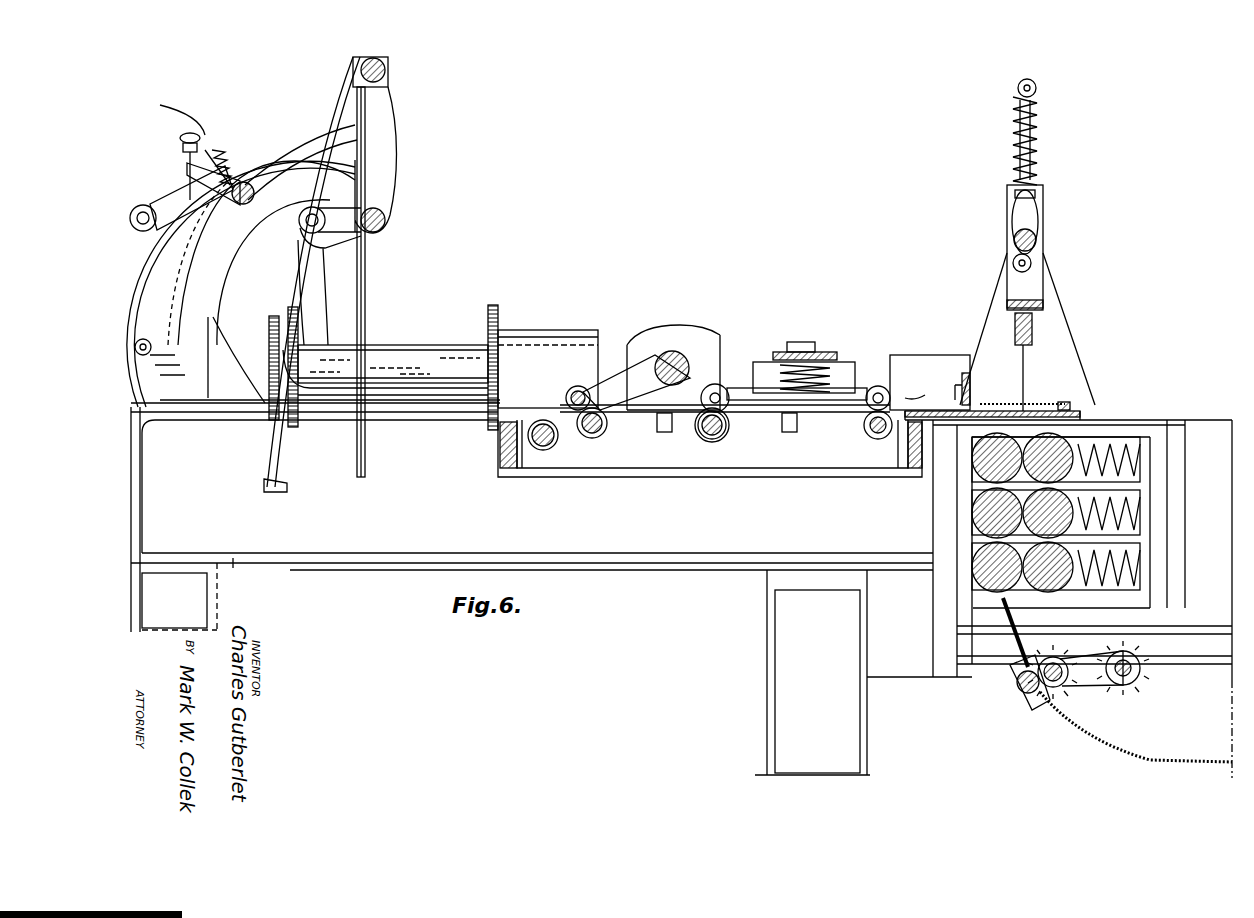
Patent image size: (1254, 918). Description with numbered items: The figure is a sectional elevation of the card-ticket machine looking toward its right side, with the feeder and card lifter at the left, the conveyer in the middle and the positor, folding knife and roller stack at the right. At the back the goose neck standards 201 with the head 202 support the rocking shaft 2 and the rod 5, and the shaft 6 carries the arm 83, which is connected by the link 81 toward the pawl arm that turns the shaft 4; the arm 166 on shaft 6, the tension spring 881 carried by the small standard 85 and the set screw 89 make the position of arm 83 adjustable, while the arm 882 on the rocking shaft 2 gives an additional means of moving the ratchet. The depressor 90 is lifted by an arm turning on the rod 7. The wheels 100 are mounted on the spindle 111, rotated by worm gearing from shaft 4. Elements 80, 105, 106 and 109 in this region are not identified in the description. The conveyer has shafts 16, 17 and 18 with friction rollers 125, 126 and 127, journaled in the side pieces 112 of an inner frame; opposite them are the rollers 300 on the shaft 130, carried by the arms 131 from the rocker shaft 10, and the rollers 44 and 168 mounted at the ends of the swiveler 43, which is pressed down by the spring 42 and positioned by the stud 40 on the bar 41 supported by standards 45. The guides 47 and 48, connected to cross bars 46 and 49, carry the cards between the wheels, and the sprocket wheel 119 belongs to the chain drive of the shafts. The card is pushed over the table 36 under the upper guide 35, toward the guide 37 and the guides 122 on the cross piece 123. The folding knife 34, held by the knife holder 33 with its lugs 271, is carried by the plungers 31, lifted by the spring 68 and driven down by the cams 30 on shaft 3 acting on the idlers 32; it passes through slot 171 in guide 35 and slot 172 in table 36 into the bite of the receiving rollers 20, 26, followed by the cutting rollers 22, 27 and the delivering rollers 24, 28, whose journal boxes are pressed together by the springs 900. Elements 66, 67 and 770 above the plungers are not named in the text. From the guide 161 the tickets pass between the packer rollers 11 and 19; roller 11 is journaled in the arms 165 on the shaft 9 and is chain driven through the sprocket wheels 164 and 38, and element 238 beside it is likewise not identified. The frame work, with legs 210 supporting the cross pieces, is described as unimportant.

The rocking shaft 2 is at (386, 220).
The revolving shaft 3 is at (1036, 240).
The shaft 4 is at (545, 418).
The rod 5 is at (388, 70).
The shaft 6 is at (212, 168).
The rod 7 is at (135, 348).
The shaft 9 is at (1120, 685).
The rocker shaft 10 is at (680, 360).
The roller 11 is at (1053, 682).
The shaft 16 is at (560, 395).
The shaft 17 is at (718, 384).
The shaft 18 is at (888, 412).
The roller 19 is at (1020, 690).
The receiving roller 20 is at (1060, 452).
The cutting roller 22 is at (1060, 505).
The holding and delivering roller 24 is at (1060, 562).
The receiving roller 26 is at (1152, 420).
The cutting roller 27 is at (1130, 535).
The holding and delivering roller 28 is at (1140, 572).
The cam 30 is at (1030, 215).
The plunger 31 is at (1040, 250).
The idler 32 is at (1032, 265).
The knife holder 33 is at (1045, 305).
The folding knife 34 is at (1028, 360).
The upper guide 35 is at (1050, 412).
The table 36 is at (1020, 405).
The guide 37 is at (925, 395).
The sprocket wheel 38 is at (1030, 700).
The stud 40 is at (806, 352).
The bar 41 is at (830, 360).
The spring 42 is at (880, 386).
The swiveler 43 is at (762, 386).
The roller 44 is at (722, 392).
The standard 45 is at (785, 358).
The cross bar 46 is at (663, 434).
The guide 47 is at (600, 442).
The guide 48 is at (712, 445).
The cross bar 49 is at (788, 434).
The spring 66 is at (1037, 117).
The knob 67 is at (1037, 88).
The spring 68 is at (1012, 117).
The cam disc 80 is at (305, 268).
The link 81 is at (152, 236).
The arm 83 is at (178, 203).
The standard 85 is at (222, 150).
The set screw 89 is at (183, 155).
The depressor 90 is at (1140, 515).
The wheel 100 is at (486, 312).
The foot 105 is at (275, 492).
The tube 106 is at (300, 268).
The rod 109 is at (366, 270).
The spindle 111 is at (400, 347).
The side piece 112 is at (560, 465).
The sprocket wheel 119 is at (960, 380).
The guide 122 is at (967, 370).
The cross piece 123 is at (983, 329).
The friction roller 125 is at (975, 400).
The friction roller 126 is at (660, 466).
The friction roller 127 is at (880, 445).
The shaft 130 is at (580, 386).
The arm 131 is at (605, 340).
The guide 161 is at (1178, 760).
The sprocket wheel 164 is at (1140, 715).
The arm 165 is at (1048, 690).
The arm 166 is at (161, 116).
The roller 168 is at (892, 395).
The slot 171 is at (1100, 408).
The slot 172 is at (1145, 410).
The goose neck standard 201 is at (283, 160).
The head 202 is at (385, 150).
The leg 210 is at (770, 640).
The bracket 238 is at (1012, 670).
The lug 271 is at (1033, 330).
The roller 300 is at (555, 395).
The rod 770 is at (1037, 152).
The tension spring 881 is at (228, 183).
The arm 882 is at (337, 213).
The spring 900 is at (1140, 590).